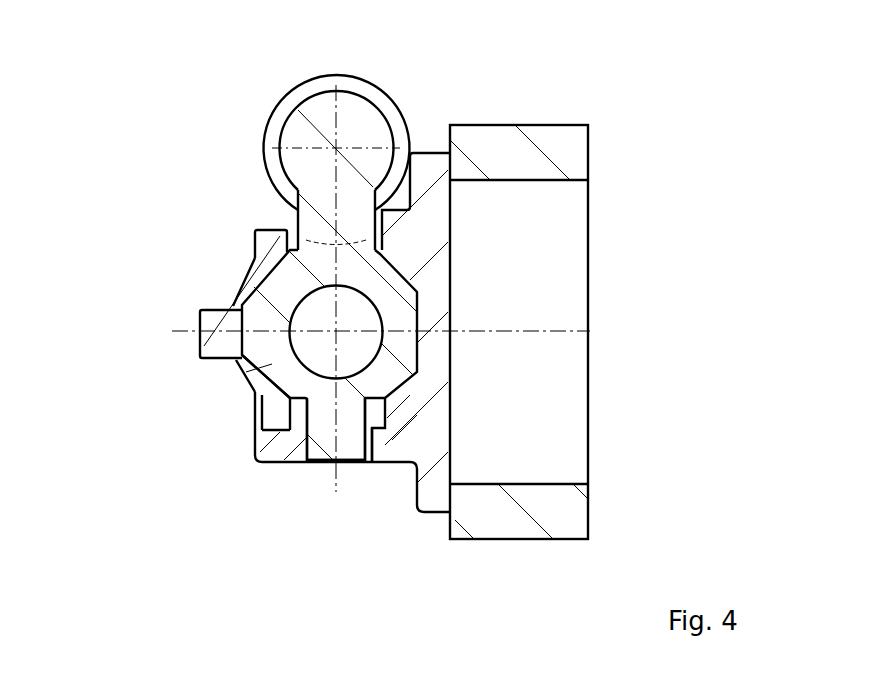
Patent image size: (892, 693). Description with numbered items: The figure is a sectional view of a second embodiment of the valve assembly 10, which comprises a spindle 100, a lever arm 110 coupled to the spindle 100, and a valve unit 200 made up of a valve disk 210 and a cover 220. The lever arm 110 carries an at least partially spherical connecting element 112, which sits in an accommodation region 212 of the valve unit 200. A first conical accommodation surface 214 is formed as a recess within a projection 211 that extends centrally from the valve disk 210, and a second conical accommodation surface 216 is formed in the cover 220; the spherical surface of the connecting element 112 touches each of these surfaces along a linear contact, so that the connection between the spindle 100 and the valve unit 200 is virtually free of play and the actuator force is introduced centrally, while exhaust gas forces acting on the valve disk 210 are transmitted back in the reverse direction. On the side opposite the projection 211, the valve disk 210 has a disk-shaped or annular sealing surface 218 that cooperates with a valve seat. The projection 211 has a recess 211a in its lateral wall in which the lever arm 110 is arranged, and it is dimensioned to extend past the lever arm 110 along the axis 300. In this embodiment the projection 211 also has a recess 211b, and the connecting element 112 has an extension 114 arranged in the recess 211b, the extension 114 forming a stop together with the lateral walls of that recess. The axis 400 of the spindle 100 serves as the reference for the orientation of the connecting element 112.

The valve assembly 10 is at (606, 280).
The spindle 100 is at (280, 293).
The lever arm 110 is at (290, 220).
The connecting element 112 is at (280, 368).
The extension 114 is at (323, 450).
The valve unit 200 is at (294, 359).
The valve disk 210 is at (431, 359).
The projection 211 is at (273, 448).
The recess 211a is at (380, 212).
The recess 211b is at (356, 455).
The accommodation region 212 is at (230, 364).
The first conical accommodation surface 214 is at (426, 300).
The second conical accommodation surface 216 is at (233, 303).
The sealing surface 218 is at (453, 493).
The cover 220 is at (195, 312).
The axis 300 is at (190, 333).
The axis of spindle 400 is at (350, 135).